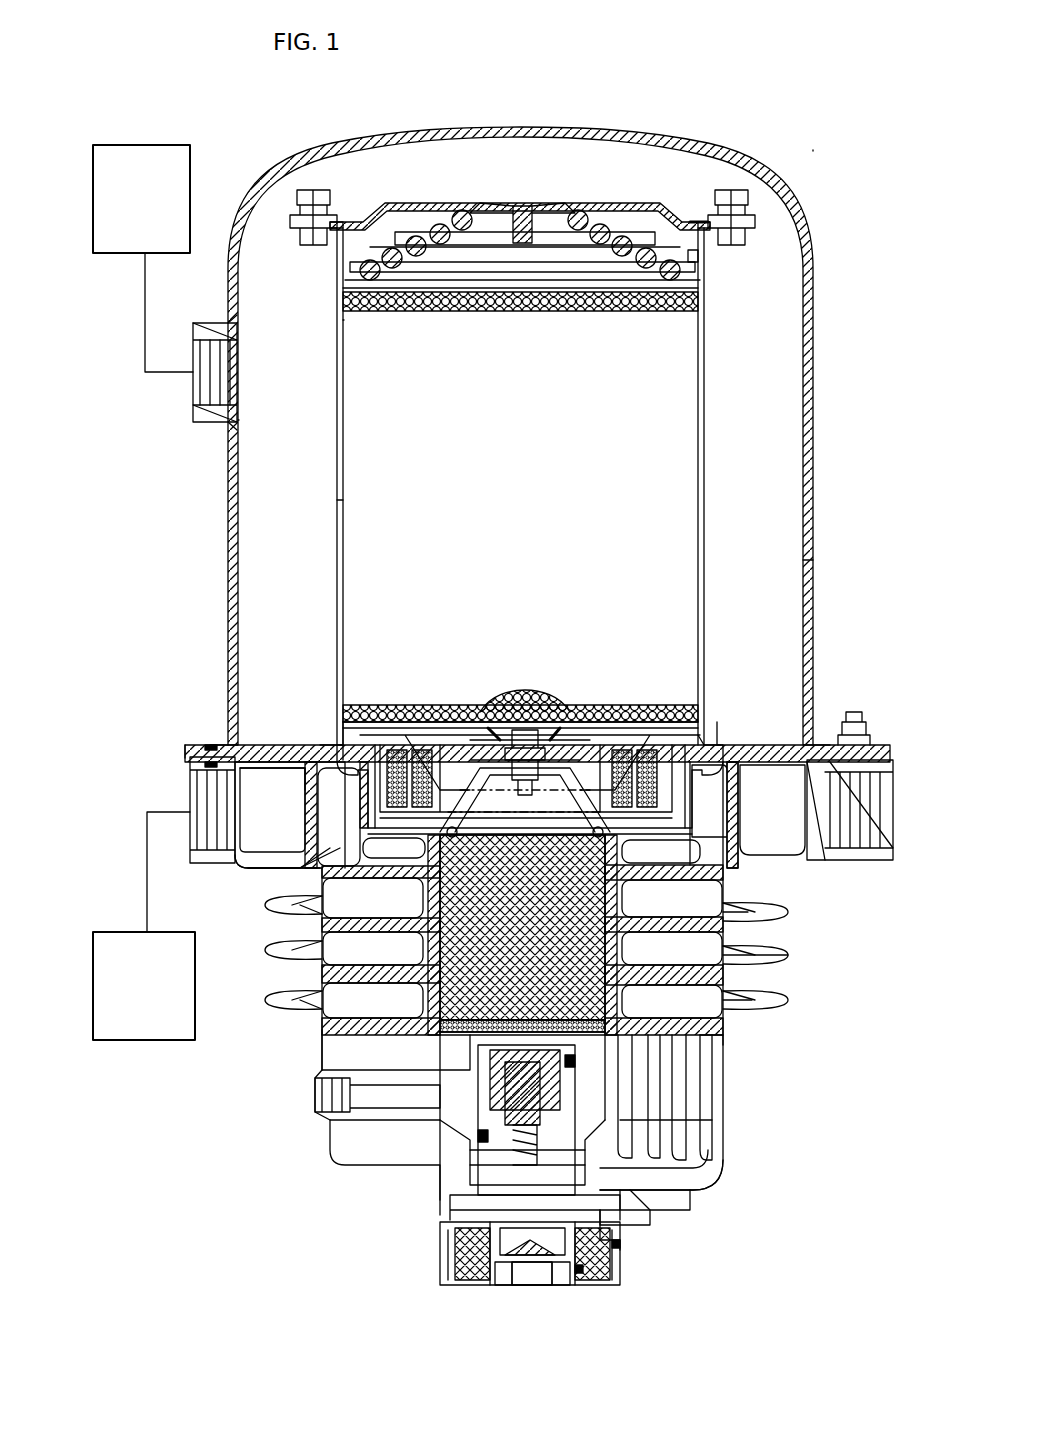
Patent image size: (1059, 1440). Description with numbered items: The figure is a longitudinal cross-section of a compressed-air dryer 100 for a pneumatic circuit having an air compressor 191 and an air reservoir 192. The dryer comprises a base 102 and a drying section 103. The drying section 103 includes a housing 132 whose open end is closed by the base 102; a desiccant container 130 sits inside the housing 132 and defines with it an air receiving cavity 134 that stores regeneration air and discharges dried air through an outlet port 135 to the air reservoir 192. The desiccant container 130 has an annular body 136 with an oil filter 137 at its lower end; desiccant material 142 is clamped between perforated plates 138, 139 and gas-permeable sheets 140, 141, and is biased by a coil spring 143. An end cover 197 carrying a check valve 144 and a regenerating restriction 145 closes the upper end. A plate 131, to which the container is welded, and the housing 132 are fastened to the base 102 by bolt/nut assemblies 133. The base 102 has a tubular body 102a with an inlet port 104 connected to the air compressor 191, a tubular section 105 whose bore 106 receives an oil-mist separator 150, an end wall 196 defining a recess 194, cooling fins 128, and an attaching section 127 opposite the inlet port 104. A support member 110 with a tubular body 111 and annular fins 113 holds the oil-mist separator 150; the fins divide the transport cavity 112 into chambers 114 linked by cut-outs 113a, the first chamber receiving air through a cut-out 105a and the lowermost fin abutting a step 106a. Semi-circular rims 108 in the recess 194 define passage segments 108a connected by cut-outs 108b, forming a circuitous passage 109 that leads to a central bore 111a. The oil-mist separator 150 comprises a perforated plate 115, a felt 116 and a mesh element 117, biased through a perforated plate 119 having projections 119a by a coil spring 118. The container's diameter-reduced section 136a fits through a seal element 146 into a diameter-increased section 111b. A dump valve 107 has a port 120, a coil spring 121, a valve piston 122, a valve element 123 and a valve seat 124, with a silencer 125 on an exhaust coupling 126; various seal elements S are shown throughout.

The compressed-air dryer 100 is at (775, 150).
The base 102 is at (815, 878).
The tubular body 102a is at (245, 868).
The drying section 103 is at (818, 398).
The inlet port 104 is at (192, 800).
The tubular section 105 is at (318, 835).
The cut-out 105a is at (742, 828).
The bore 106 is at (315, 790).
The step 106a is at (322, 1050).
The dump valve 107 is at (430, 1185).
The semi-circular rims 108 is at (680, 1080).
The passage segments 108a is at (700, 1122).
The cut-outs 108b is at (655, 1205).
The circuitous passage 109 is at (725, 1150).
The support member 110 is at (660, 900).
The tubular body 111 is at (640, 945).
The central bore 111a is at (475, 1050).
The diameter-increased section 111b is at (740, 785).
The transport cavity 112 is at (265, 875).
The annular fins 113 is at (390, 880).
The cut-outs 113a is at (310, 905).
The chambers 114 is at (370, 893).
The perforated plate 115 is at (448, 1036).
The felt 116 is at (440, 1020).
The mesh element 117 is at (448, 968).
The coil spring 118 is at (447, 745).
The perforated plate 119 is at (625, 848).
The projections 119a is at (495, 808).
The port 120 is at (315, 1100).
The coil spring 121 is at (350, 1145).
The valve piston 122 is at (455, 1138).
The valve element 123 is at (470, 1180).
The valve seat 124 is at (640, 1235).
The silencer 125 is at (440, 1270).
The exhaust coupling 126 is at (495, 1280).
The attaching section 127 is at (875, 860).
The cooling fins 128 is at (268, 952).
The desiccant container 130 is at (335, 505).
The plate 131 is at (775, 745).
The housing 132 is at (808, 578).
The bolt/nut assemblies 133 is at (854, 712).
The air receiving cavity 134 is at (273, 435).
The outlet port 135 is at (193, 390).
The annular body 136 is at (706, 462).
The diameter-reduced section 136a is at (700, 775).
The oil filter 137 is at (590, 735).
The perforated plate 138 is at (650, 703).
The perforated plate 139 is at (700, 256).
The gas-permeable sheet 140 is at (385, 708).
The gas-permeable sheet 141 is at (624, 305).
The desiccant material 142 is at (438, 423).
The coil spring 143 is at (460, 214).
The check valve 144 is at (522, 200).
The regenerating restriction 145 is at (598, 214).
The seal element 146 is at (330, 760).
The oil-mist separator 150 is at (770, 960).
The air compressor 191 is at (145, 1040).
The air reservoir 192 is at (145, 145).
The recess 194 is at (718, 1055).
The end wall 196 is at (690, 1185).
The end cover 197 is at (405, 210).
The seal elements S is at (700, 220).